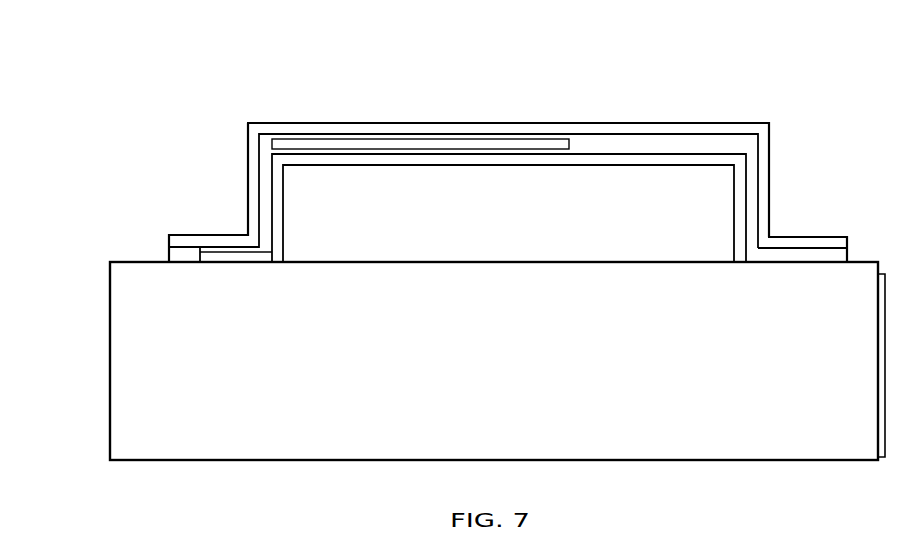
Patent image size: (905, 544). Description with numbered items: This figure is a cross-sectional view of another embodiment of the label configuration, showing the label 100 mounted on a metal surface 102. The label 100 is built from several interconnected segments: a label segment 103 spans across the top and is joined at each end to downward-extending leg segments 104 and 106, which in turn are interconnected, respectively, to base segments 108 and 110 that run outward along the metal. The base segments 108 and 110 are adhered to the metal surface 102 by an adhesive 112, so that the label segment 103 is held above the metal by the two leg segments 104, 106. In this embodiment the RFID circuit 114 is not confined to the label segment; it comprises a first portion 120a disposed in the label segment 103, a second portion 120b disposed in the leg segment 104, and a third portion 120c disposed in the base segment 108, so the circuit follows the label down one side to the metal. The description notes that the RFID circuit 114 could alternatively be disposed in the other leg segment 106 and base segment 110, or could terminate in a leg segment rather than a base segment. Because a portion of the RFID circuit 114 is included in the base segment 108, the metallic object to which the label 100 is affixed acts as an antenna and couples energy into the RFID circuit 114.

The label 100 is at (302, 74).
The metal surface 102 is at (107, 378).
The label segment 103 is at (437, 122).
The leg segment 104 is at (247, 161).
The leg segment 106 is at (772, 162).
The base segment 108 is at (187, 233).
The base segment 110 is at (805, 235).
The adhesive 112 is at (738, 141).
The RFID circuit 114 is at (564, 131).
The first portion 120a is at (350, 146).
The second portion 120b is at (267, 225).
The third portion 120c is at (222, 255).